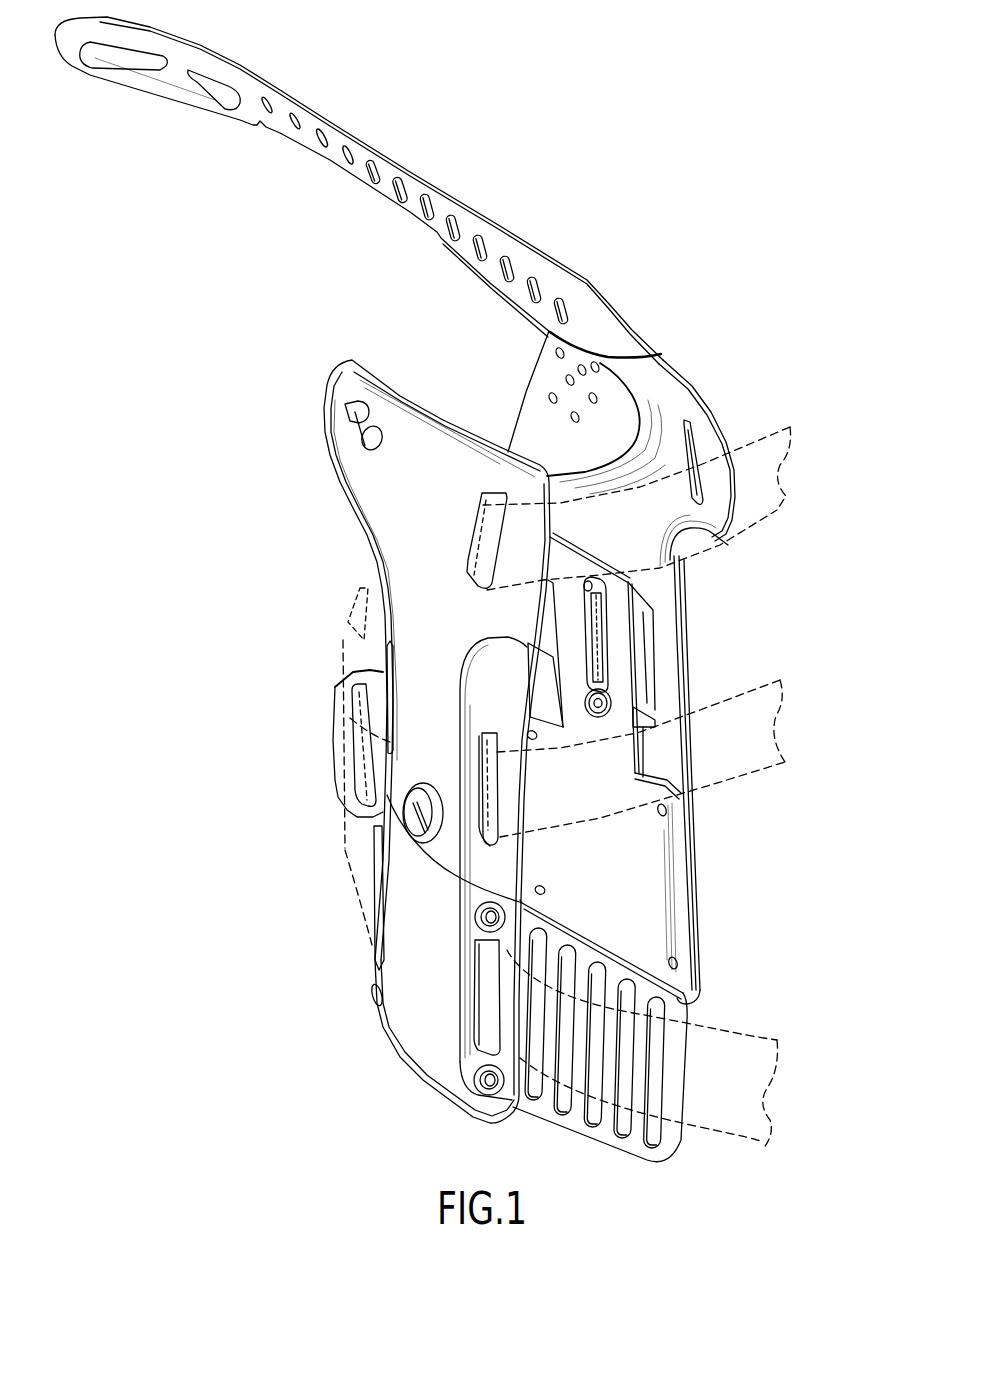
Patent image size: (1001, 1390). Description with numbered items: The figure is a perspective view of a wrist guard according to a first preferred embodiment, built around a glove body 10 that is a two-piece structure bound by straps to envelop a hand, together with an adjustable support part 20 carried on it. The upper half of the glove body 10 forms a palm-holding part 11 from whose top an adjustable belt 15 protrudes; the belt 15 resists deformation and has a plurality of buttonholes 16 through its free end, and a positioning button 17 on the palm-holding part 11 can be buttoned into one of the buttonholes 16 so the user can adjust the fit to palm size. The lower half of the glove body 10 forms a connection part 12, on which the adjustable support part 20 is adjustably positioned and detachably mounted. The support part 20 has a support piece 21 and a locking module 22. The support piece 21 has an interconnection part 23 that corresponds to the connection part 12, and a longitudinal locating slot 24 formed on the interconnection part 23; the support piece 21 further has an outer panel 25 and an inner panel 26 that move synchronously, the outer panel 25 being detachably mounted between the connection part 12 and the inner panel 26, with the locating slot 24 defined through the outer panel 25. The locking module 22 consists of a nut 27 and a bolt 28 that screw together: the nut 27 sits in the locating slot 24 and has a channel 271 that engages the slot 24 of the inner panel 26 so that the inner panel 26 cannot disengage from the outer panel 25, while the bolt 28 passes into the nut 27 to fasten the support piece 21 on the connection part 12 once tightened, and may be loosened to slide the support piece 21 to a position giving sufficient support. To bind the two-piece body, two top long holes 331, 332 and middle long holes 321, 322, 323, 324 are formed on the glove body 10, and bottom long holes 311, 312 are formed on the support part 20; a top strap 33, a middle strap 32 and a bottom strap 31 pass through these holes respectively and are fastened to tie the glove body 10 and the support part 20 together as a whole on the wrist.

The glove body 10 is at (710, 397).
The palm-holding part 11 is at (590, 276).
The connection part 12 is at (420, 583).
The adjustable belt 15 is at (358, 150).
The buttonholes 16 is at (203, 82).
The positioning button 17 is at (343, 438).
The adjustable support part 20 is at (650, 863).
The support piece 21 is at (700, 823).
The locking module 22 is at (612, 684).
The interconnection part 23 is at (618, 587).
The longitudinal locating slot 24 is at (584, 645).
The outer panel 25 is at (400, 903).
The inner panel 26 is at (667, 925).
The nut 27 is at (600, 707).
The bolt 28 is at (417, 807).
The bottom strap 31 is at (750, 1040).
The middle strap 32 is at (589, 792).
The top strap 33 is at (762, 493).
The channel 271 is at (603, 688).
The bottom long hole 311 is at (377, 937).
The bottom long hole 312 is at (493, 1027).
The middle long hole 321 is at (387, 673).
The middle long hole 322 is at (486, 770).
The middle long hole 323 is at (647, 630).
The middle long hole 324 is at (543, 580).
The top long hole 331 is at (488, 517).
The top long hole 332 is at (693, 440).